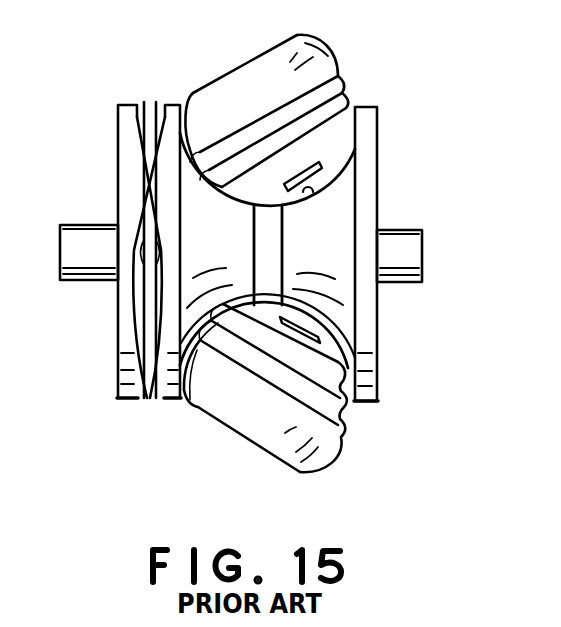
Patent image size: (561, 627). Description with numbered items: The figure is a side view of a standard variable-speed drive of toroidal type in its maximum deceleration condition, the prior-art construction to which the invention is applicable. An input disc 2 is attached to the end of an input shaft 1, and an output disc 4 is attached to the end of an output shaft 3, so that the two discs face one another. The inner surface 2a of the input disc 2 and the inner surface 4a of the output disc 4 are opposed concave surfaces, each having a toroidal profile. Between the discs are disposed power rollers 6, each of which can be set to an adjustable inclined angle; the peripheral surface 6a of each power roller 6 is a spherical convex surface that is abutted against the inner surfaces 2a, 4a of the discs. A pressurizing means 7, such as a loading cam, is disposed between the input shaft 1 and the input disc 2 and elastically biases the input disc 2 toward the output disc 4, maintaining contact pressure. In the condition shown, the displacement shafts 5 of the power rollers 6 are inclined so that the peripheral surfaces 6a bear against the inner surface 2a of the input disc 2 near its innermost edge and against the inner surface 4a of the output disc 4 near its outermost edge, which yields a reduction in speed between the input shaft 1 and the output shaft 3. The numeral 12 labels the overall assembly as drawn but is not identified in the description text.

The input shaft 1 is at (87, 277).
The input disc 2 is at (163, 402).
The inner surface of the input disc 2a is at (202, 405).
The output shaft 3 is at (413, 257).
The output disc 4 is at (362, 402).
The inner surface of the output disc 4a is at (316, 192).
The displacement shaft 5 is at (320, 163).
The power roller 6 is at (338, 143).
The peripheral surface of the power roller 6a is at (340, 133).
The pressurizing means 7 is at (137, 402).
The universal joint (prior art) 12 is at (362, 60).